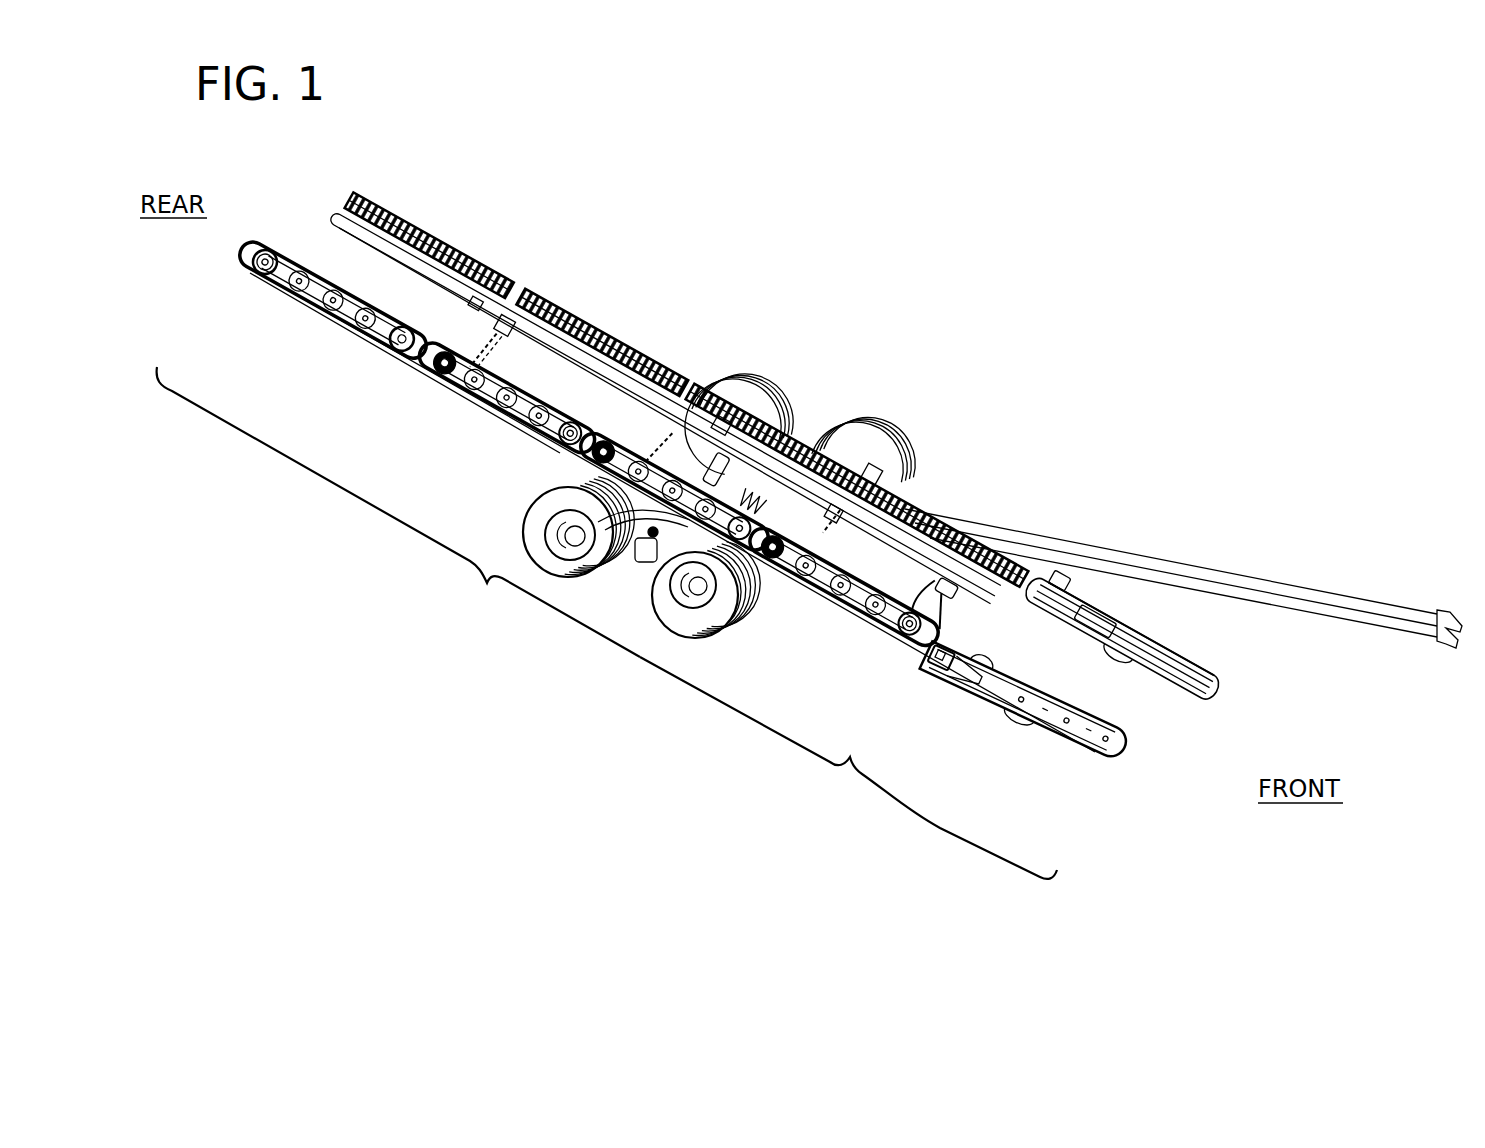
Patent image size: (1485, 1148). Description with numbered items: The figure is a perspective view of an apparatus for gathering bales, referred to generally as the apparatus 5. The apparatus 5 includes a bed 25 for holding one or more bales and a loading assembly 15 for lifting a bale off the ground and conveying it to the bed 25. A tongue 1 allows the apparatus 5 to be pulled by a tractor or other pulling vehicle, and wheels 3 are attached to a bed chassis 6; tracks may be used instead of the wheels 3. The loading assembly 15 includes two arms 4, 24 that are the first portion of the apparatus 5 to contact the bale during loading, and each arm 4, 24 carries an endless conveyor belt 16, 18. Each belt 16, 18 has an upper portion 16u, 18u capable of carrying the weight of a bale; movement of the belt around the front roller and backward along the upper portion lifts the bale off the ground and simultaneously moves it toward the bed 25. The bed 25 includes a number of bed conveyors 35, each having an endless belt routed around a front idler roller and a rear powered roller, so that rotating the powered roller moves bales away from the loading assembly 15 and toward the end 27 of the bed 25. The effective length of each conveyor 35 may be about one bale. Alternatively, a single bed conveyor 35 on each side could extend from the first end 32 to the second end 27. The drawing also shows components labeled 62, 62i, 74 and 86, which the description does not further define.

The tongue 1 is at (1198, 575).
The wheels 3 is at (757, 384).
The arm 4 is at (1080, 750).
The apparatus for gathering bales 5 is at (946, 310).
The bed chassis 6 is at (553, 350).
The loading assembly 15 is at (848, 768).
The endless conveyor belt 16 is at (1124, 748).
The upper portion 16u is at (1030, 722).
The endless conveyor belt 18 is at (1215, 698).
The upper portion 18u is at (1127, 623).
The arm 24 is at (1187, 667).
The bed 25 is at (487, 583).
The end of the bed 27 is at (345, 207).
The first end 32 is at (1043, 590).
The bed conveyors 35 is at (447, 245).
The conveyor chain sprocket 62 is at (400, 342).
The idler sprocket 62i is at (259, 273).
The coupling bracket 74 is at (1060, 580).
The support bracket 86 is at (497, 323).